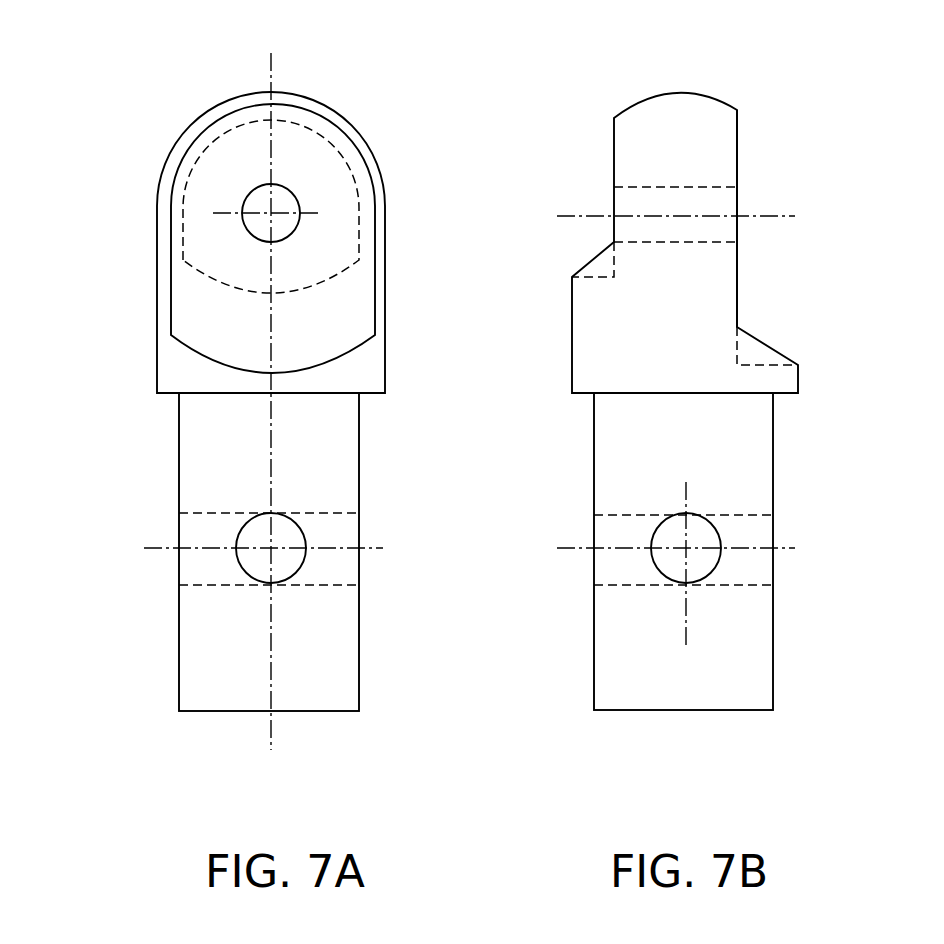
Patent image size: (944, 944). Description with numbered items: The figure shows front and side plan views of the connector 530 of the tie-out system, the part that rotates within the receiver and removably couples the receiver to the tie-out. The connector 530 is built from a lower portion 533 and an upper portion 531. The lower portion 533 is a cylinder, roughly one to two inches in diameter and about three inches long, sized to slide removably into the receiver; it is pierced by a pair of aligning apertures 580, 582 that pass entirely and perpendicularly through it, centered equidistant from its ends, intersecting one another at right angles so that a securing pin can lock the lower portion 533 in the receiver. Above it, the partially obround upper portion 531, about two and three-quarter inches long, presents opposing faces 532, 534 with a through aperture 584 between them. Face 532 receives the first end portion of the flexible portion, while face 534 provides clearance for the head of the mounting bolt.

In FIG. 7A, the connector 530 is at (97, 176).
In FIG. 7B, the upper portion 531 is at (583, 335).
In FIG. 7B, the face 532 is at (737, 162).
In FIG. 7A, the lower portion 533 is at (340, 656).
In FIG. 7B, the face 534 is at (614, 161).
In FIG. 7A, the aligning aperture 580 is at (285, 531).
In FIG. 7B, the aligning aperture 582 is at (672, 563).
In FIG. 7A, the through aperture 584 is at (283, 198).